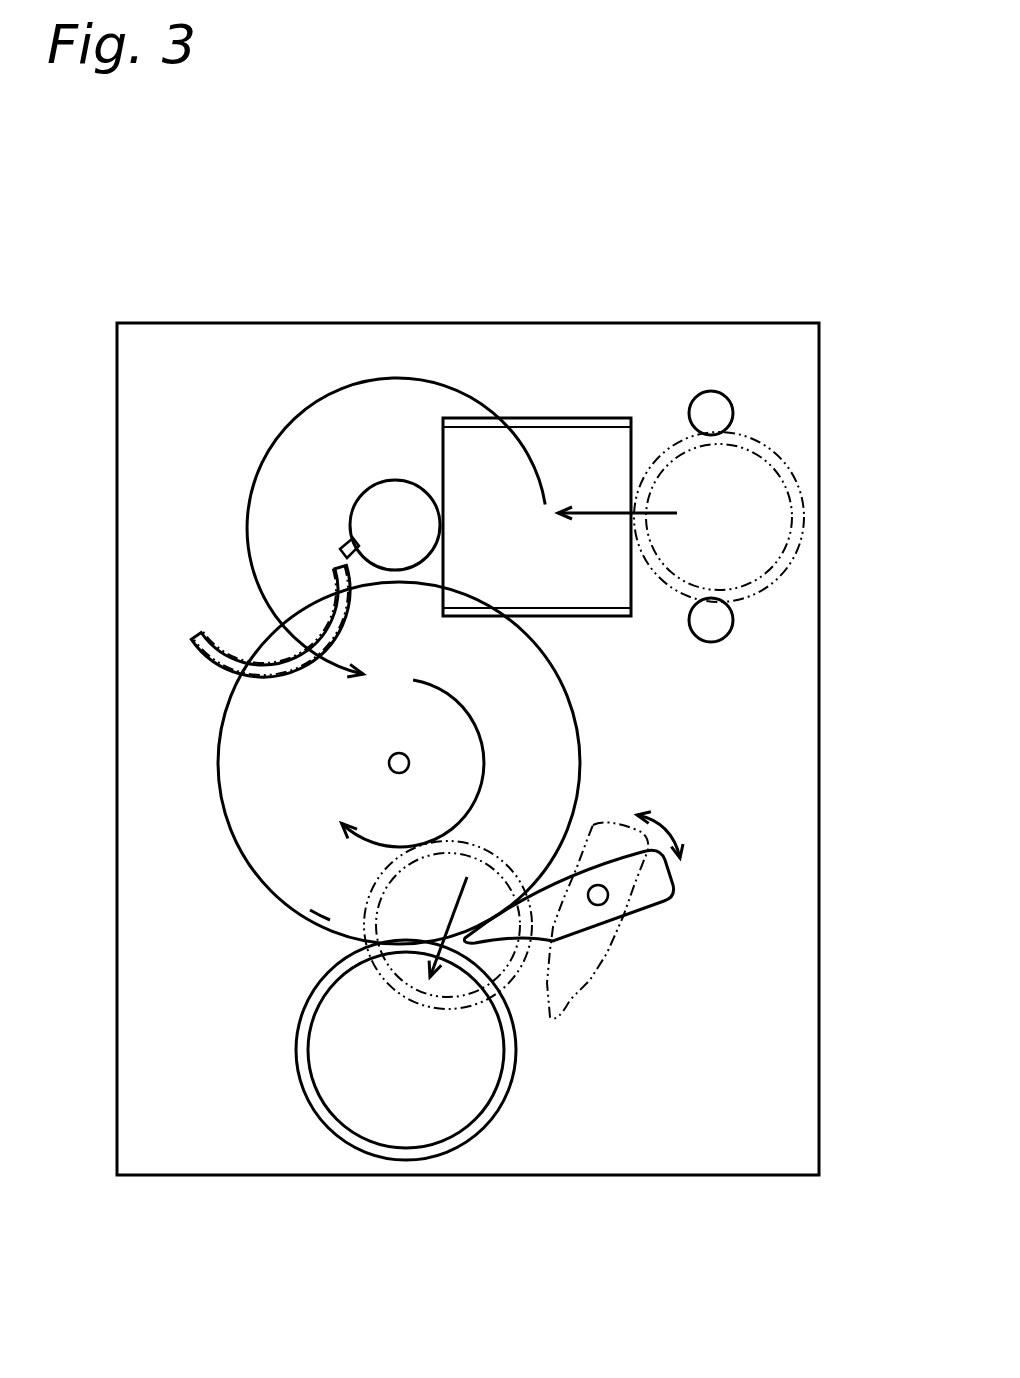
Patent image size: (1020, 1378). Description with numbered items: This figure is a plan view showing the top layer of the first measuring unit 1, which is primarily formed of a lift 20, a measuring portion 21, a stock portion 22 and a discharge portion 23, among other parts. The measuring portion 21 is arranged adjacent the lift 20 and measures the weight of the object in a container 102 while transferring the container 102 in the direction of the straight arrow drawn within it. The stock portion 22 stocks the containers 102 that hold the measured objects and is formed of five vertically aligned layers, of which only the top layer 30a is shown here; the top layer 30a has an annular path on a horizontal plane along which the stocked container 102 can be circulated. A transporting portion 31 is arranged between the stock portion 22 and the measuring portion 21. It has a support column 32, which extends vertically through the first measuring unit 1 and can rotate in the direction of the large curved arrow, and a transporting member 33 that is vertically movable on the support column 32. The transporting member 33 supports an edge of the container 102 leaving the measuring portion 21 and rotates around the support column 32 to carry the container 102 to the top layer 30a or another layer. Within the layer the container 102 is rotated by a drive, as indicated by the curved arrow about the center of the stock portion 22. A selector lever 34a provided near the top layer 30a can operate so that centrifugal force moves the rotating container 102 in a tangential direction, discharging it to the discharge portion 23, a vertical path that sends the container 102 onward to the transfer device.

The first measuring unit 1 is at (732, 290).
The lift 20 is at (778, 428).
The measuring portion 21 is at (560, 417).
The stock portion 22 is at (218, 853).
The discharge portion 23 is at (293, 1028).
The top layer 30a is at (280, 873).
The transporting portion 31 is at (241, 468).
The support column 32 is at (395, 525).
The transporting member 33 is at (195, 545).
The selector lever 34a is at (653, 892).
The container 102 is at (293, 668).